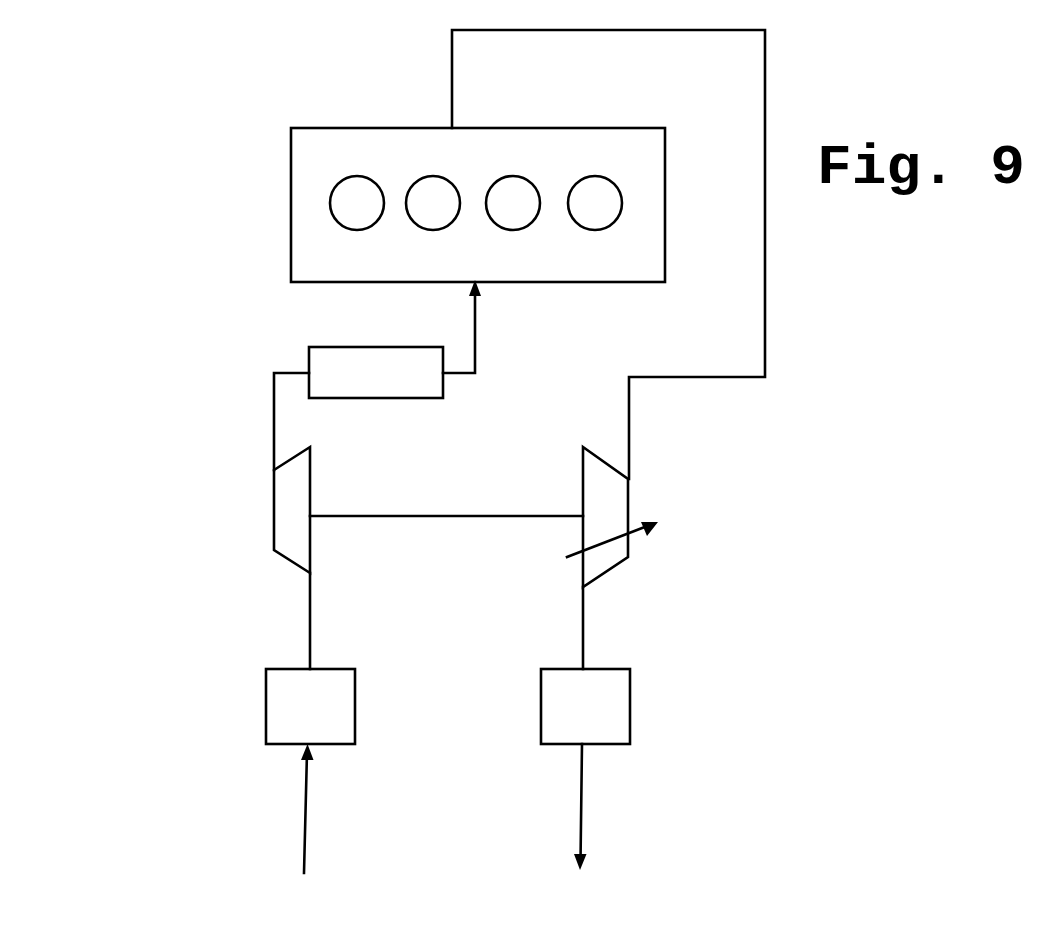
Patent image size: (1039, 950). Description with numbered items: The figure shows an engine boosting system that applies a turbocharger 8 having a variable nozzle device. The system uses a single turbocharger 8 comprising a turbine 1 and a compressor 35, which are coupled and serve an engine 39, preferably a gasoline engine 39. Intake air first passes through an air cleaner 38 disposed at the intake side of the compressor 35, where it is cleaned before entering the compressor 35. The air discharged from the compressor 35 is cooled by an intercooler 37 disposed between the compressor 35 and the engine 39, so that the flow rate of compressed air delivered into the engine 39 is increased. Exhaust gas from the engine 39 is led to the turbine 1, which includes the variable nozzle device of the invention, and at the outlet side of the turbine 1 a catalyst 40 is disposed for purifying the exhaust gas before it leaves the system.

The turbine 1 is at (628, 479).
The turbocharger 8 is at (446, 492).
The compressor 35 is at (280, 503).
The intercooler 37 is at (335, 358).
The air cleaner 38 is at (292, 708).
The engine 39 is at (308, 177).
The catalyst 40 is at (610, 713).